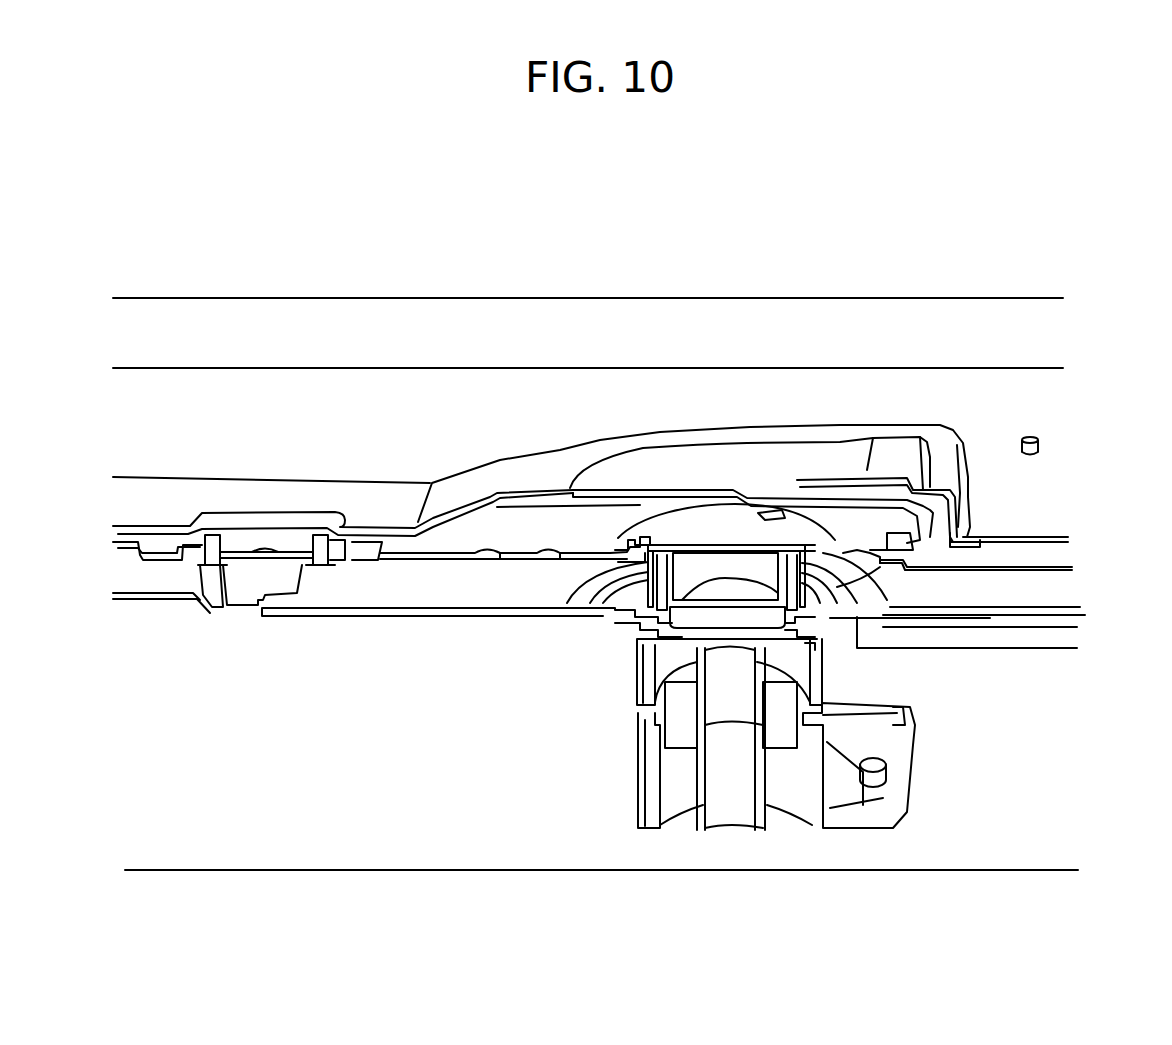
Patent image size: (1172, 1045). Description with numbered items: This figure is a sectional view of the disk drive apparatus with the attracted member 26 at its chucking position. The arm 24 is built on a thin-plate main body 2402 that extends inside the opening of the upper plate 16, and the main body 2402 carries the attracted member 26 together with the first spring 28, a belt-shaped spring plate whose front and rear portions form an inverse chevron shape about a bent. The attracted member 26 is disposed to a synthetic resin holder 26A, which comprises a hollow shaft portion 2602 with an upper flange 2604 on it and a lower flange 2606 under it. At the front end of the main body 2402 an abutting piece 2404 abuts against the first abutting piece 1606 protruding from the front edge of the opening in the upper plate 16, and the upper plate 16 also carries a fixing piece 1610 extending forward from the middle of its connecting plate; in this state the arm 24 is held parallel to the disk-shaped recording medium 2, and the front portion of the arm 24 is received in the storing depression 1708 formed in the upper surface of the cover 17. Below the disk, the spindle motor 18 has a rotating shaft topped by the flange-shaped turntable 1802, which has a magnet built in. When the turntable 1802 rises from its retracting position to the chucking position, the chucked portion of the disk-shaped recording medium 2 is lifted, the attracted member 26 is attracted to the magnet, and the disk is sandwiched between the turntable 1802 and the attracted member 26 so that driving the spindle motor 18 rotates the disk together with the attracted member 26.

The disk-shaped recording medium 2 is at (264, 627).
The upper plate 16 is at (1058, 552).
The cover 17 is at (729, 382).
The spindle motor 18 is at (617, 787).
The arm 24 is at (469, 534).
The attracted member 26 is at (729, 514).
The synthetic resin holder 26A is at (740, 590).
The first spring 28 is at (349, 579).
The first abutting piece 1606 is at (890, 563).
The fixing piece 1610 is at (243, 547).
The storing depression 1708 is at (657, 443).
The turntable 1802 is at (613, 623).
The main body 2402 is at (506, 538).
The abutting piece 2404 is at (905, 557).
The shaft portion 2602 is at (837, 612).
The upper flange 2604 is at (620, 535).
The lower flange 2606 is at (598, 615).